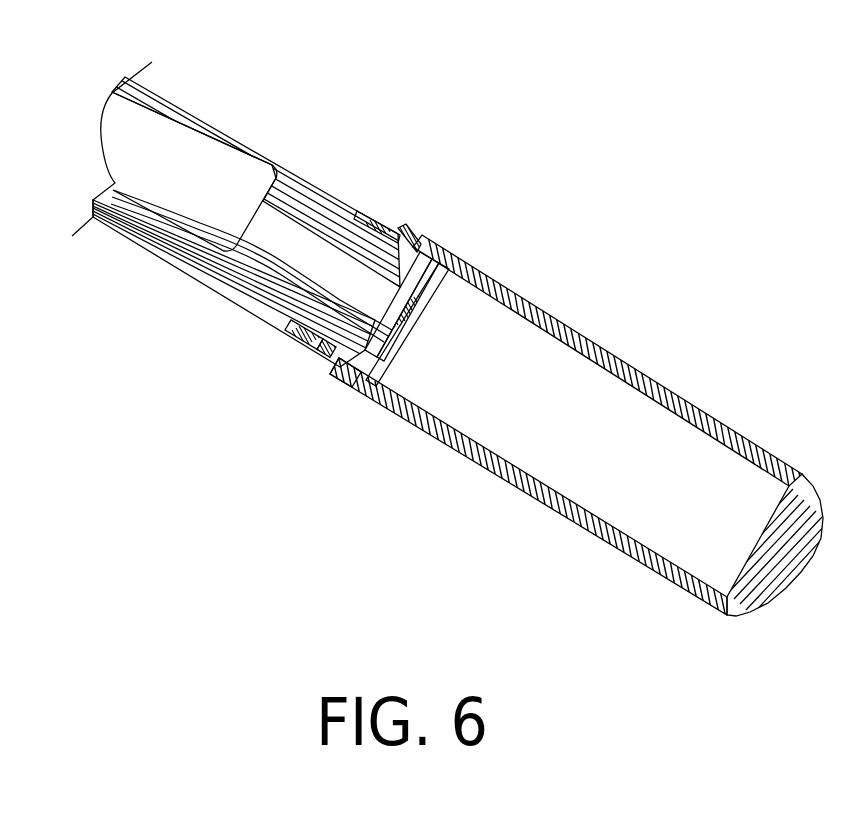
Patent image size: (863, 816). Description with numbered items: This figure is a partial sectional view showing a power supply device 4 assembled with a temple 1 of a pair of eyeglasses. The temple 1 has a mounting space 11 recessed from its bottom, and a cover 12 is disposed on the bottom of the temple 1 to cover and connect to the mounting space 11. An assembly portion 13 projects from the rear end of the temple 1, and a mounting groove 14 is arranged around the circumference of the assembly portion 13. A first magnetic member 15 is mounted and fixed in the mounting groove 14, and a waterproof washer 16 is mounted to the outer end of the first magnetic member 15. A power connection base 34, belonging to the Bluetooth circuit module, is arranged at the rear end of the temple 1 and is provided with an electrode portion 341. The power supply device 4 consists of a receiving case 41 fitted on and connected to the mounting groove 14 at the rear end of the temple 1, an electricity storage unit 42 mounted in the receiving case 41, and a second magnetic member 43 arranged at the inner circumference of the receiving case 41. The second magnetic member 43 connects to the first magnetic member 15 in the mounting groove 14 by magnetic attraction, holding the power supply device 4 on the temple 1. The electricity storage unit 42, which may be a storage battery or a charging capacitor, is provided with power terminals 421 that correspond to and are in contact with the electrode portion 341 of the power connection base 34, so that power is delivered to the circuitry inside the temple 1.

The temple 1 is at (184, 90).
The mounting space 11 is at (210, 165).
The cover 12 is at (148, 242).
The assembly portion 13 is at (398, 257).
The mounting groove 14 is at (373, 207).
The first magnetic member 15 is at (283, 347).
The waterproof washer 16 is at (308, 358).
The power connection base 34 is at (412, 322).
The electrode portion 341 is at (420, 320).
The power supply device 4 is at (585, 433).
The receiving case 41 is at (700, 410).
The electricity storage unit 42 is at (577, 487).
The power terminals 421 is at (415, 328).
The second magnetic member 43 is at (325, 367).